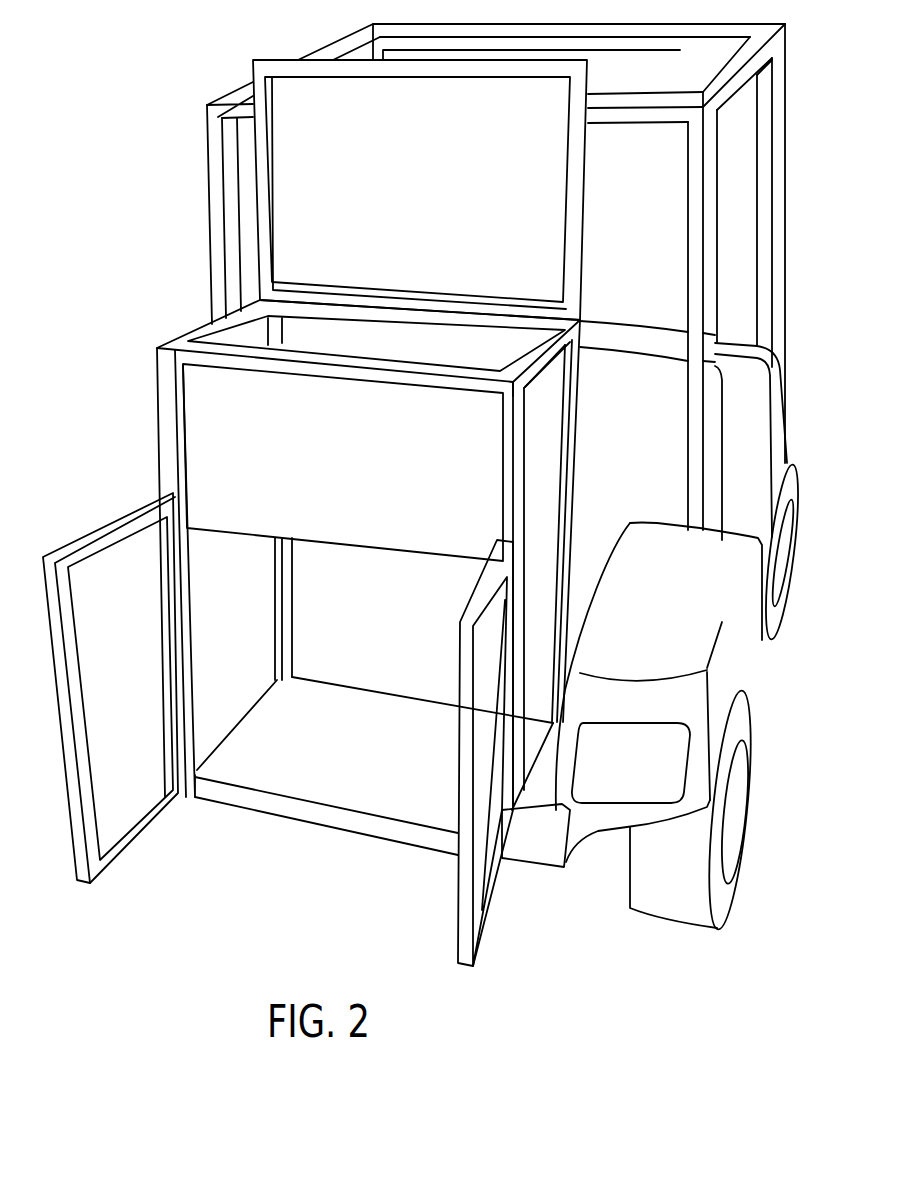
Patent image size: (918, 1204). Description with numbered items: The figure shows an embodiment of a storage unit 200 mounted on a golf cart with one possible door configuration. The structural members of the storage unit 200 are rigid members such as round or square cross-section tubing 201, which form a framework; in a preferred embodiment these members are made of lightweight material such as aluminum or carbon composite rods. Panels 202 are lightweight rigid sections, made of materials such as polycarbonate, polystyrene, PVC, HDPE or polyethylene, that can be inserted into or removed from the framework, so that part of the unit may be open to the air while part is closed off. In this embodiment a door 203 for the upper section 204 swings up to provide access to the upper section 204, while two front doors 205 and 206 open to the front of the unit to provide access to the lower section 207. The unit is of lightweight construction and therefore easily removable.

The storage unit 200 is at (139, 397).
The tubing 201 is at (175, 341).
The panels 202 is at (545, 418).
The door 203 is at (262, 190).
The upper section 204 is at (200, 450).
The front door 205 is at (118, 563).
The front door 206 is at (488, 857).
The lower section 207 is at (383, 668).